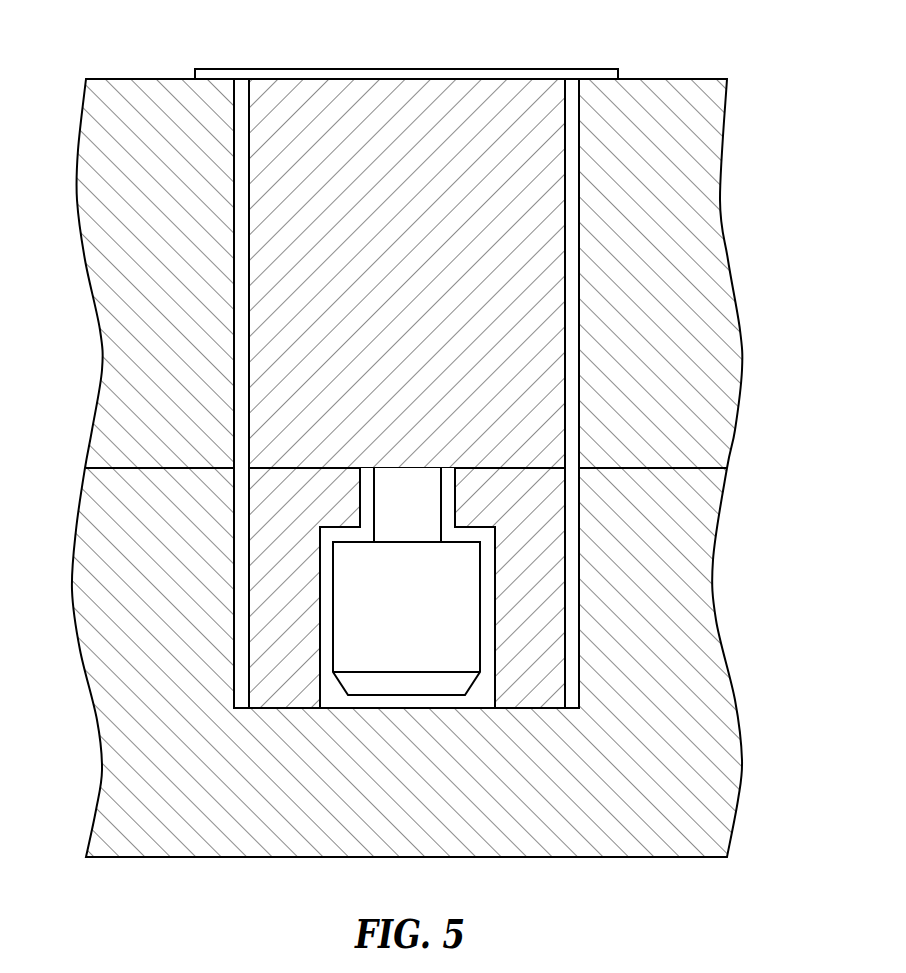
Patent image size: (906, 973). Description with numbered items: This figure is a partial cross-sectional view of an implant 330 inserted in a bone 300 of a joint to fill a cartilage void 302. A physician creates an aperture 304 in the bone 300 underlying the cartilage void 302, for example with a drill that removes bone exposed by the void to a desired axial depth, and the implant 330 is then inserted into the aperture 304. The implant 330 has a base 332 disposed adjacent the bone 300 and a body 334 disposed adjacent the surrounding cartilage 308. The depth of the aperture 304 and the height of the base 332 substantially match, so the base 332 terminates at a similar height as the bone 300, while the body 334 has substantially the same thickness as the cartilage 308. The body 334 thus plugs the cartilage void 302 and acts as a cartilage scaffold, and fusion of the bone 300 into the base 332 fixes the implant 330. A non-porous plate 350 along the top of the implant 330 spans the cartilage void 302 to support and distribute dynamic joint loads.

The bone 300 is at (175, 823).
The cartilage void 302 is at (575, 186).
The aperture 304 is at (238, 645).
The cartilage 308 is at (100, 262).
The implant 330 is at (406, 357).
The base 332 is at (540, 657).
The body 334 is at (496, 92).
The plate 350 is at (406, 69).